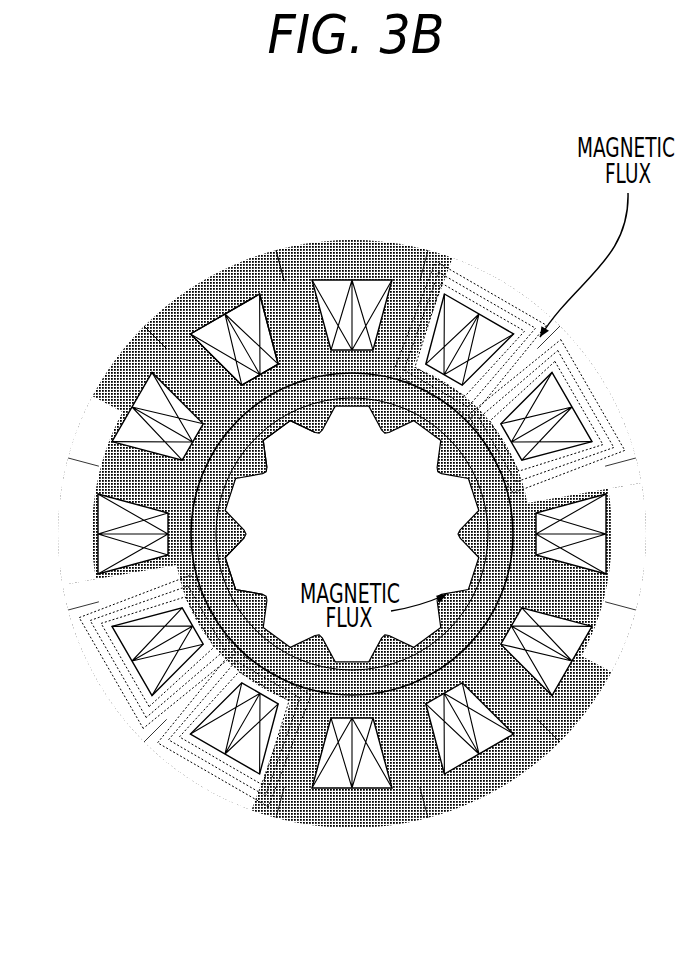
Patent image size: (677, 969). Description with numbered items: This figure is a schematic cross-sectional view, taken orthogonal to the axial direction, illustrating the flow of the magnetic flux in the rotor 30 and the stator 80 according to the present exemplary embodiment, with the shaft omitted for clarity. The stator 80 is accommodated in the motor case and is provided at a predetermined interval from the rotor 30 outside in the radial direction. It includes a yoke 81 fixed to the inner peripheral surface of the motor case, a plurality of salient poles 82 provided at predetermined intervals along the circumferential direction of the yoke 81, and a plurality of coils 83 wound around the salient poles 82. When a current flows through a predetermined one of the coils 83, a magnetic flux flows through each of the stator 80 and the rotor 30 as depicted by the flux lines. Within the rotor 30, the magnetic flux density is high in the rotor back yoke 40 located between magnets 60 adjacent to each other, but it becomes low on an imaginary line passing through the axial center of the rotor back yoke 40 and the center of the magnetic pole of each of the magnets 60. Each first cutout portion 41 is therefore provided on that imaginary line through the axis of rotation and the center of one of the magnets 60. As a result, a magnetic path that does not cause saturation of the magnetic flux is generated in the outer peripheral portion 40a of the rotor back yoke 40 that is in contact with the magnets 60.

The rotor 30 is at (287, 610).
The stator 80 is at (340, 158).
The yoke 81 is at (193, 263).
The salient pole 82 is at (285, 282).
The coil 83 is at (248, 318).
The magnet 60 is at (428, 440).
The rotor back yoke 40 is at (263, 462).
The first cutout portion 41 is at (284, 438).
The outer peripheral portion 40a is at (230, 576).